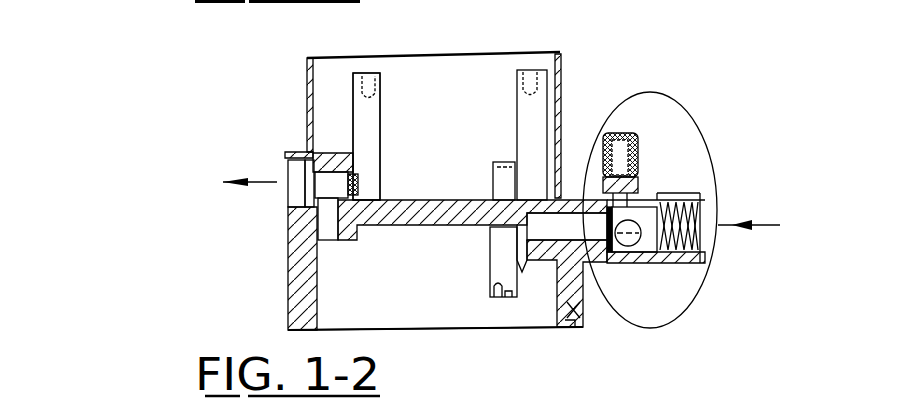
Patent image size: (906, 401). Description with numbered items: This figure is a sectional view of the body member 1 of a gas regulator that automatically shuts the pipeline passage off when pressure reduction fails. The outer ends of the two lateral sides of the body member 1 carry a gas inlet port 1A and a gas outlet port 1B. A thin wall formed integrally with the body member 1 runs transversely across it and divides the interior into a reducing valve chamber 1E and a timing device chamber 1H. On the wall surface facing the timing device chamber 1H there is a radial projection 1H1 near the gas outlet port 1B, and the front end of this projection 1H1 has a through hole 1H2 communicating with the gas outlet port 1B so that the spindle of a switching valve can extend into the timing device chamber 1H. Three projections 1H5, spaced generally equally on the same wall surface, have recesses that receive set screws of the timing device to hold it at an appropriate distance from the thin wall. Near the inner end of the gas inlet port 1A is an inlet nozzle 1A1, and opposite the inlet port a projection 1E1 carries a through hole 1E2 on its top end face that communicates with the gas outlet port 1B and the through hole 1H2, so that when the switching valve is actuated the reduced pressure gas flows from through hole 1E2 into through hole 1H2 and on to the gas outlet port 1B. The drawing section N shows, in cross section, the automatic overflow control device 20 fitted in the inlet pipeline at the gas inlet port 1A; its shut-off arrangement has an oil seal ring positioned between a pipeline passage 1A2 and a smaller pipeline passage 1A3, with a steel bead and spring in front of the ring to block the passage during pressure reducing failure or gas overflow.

The body member 1 is at (486, 199).
The timing device chamber 1H is at (423, 182).
The radial projection 1H1 is at (339, 153).
The through hole 1H2 is at (357, 190).
The projection 1H5 is at (494, 161).
The gas outlet port 1B is at (290, 197).
The reducing valve chamber 1E is at (405, 297).
The projection 1E1 is at (348, 247).
The through hole 1E2 is at (290, 253).
The gas inlet port 1A is at (699, 208).
The inlet nozzle 1A1 is at (520, 262).
The pipeline passage 1A2 is at (648, 250).
The smaller pipeline passage 1A3 is at (584, 228).
The drawing section N is at (684, 103).
The automatic overflow control device 20 is at (706, 293).